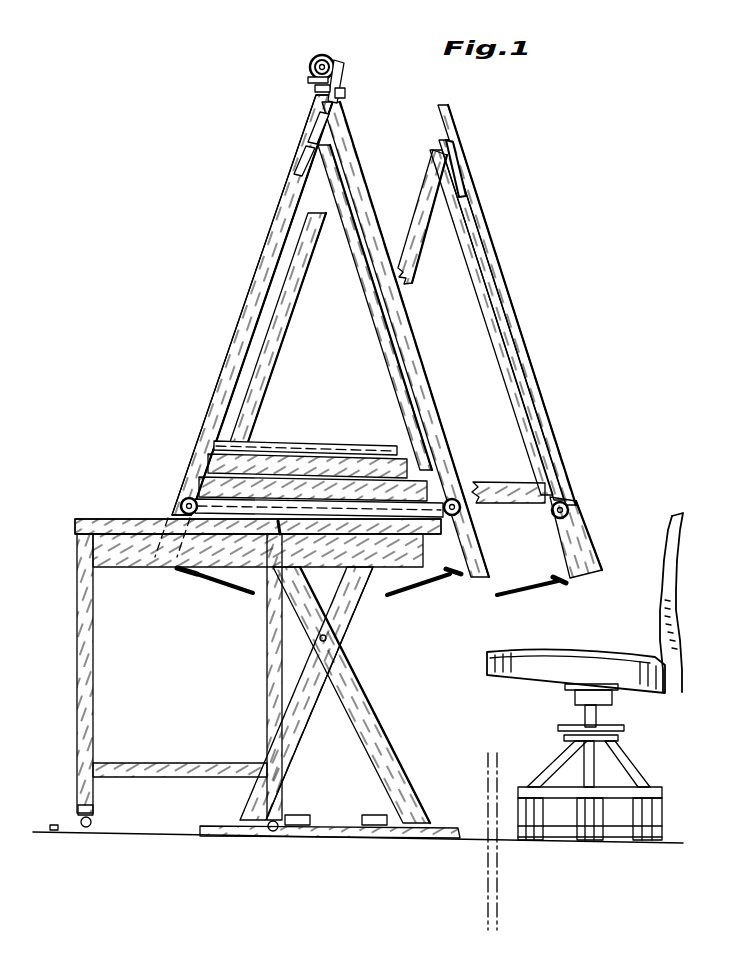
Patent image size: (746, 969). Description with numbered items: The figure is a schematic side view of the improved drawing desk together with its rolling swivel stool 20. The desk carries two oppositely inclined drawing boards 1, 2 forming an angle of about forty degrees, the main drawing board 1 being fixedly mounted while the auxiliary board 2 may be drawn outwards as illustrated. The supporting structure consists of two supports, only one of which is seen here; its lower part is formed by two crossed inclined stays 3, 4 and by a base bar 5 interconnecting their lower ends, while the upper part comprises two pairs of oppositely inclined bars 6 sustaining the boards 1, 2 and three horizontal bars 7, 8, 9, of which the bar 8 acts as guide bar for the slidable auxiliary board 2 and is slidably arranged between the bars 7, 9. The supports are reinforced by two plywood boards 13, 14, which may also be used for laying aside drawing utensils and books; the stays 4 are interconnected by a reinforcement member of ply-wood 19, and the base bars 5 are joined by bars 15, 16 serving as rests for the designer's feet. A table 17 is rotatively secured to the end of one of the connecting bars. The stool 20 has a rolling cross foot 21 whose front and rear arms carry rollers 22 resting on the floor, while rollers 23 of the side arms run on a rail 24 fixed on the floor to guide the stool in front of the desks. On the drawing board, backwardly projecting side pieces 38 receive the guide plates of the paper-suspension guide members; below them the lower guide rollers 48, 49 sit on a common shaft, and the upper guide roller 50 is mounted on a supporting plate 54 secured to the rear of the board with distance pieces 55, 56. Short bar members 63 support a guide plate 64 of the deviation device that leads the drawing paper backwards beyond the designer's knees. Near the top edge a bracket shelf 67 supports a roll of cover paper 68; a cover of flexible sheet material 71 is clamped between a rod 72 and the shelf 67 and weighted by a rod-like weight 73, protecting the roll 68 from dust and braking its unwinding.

The main drawing board 1 is at (288, 372).
The auxiliary board 2 is at (417, 363).
The inclined stay 3 is at (480, 250).
The inclined stay 4 is at (300, 728).
The base bar 5 is at (318, 823).
The oppositely inclined bars 6 is at (257, 377).
The horizontal bar 7 is at (255, 450).
The guide bar 8 is at (275, 467).
The horizontal bar 9 is at (300, 488).
The plywood board 13 is at (318, 503).
The plywood board 14 is at (368, 508).
The bar 15 is at (293, 813).
The bar 16 is at (373, 815).
The table 17 is at (102, 551).
The reinforcement member of ply-wood 19 is at (328, 590).
The rolling swivel stool 20 is at (585, 632).
The rolling cross foot 21 is at (610, 793).
The rollers 22 is at (530, 842).
The rollers 23 is at (578, 843).
The rail 24 is at (53, 822).
The backwardly projecting side pieces 38 is at (268, 282).
The lower guide roller 48 is at (374, 526).
The lower guide roller 49 is at (553, 516).
The upper guide roller 50 is at (587, 557).
The supporting plate 54 is at (452, 167).
The distance piece 55 is at (328, 117).
The distance piece 56 is at (300, 163).
The short bar members 63 is at (194, 574).
The guide plate 64 is at (237, 593).
The bracket shelf 67 is at (312, 80).
The roll of cover paper 68 is at (316, 58).
The cover of flexible sheet material 71 is at (336, 70).
The rod 72 is at (320, 88).
The rod-like weight 73 is at (347, 93).